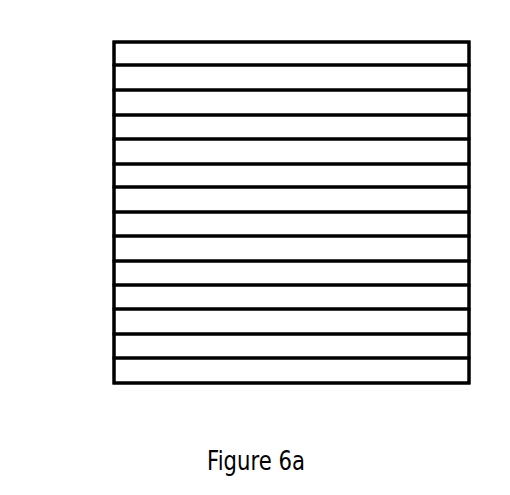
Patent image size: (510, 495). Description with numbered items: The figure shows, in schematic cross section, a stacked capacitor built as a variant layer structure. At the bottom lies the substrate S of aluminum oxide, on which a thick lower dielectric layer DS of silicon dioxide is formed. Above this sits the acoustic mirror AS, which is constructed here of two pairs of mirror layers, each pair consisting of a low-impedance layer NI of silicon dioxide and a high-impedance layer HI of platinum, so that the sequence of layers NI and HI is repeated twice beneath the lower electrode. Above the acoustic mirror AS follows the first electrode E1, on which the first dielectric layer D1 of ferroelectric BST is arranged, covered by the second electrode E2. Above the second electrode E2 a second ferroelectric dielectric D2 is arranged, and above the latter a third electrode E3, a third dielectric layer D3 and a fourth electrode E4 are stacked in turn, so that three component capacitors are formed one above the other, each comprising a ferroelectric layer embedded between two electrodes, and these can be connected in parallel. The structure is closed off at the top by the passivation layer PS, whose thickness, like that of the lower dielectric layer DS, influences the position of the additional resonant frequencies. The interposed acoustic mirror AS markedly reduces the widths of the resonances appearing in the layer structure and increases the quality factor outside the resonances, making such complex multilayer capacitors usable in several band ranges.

The passivation layer PS is at (291, 53).
The fourth electrode E4 is at (291, 78).
The third dielectric layer D3 is at (291, 103).
The third electrode E3 is at (291, 127).
The second ferroelectric dielectric D2 is at (291, 152).
The second electrode E2 is at (291, 175).
The first dielectric layer D1 is at (291, 200).
The first electrode E1 is at (291, 224).
The low-impedance layer NI is at (291, 273).
The high-impedance layer HI is at (291, 298).
The lower dielectric layer DS is at (291, 346).
The substrate S is at (291, 371).
The acoustic mirror AS is at (108, 236).